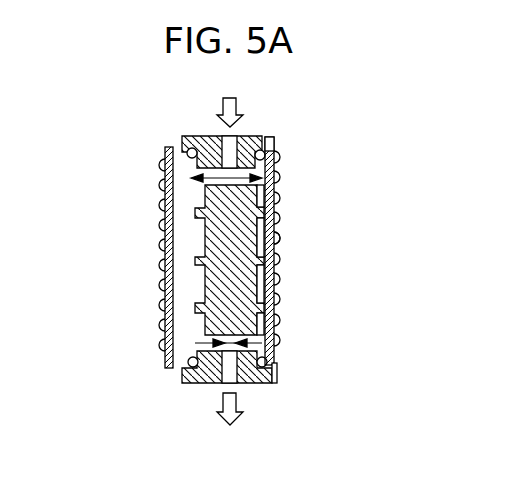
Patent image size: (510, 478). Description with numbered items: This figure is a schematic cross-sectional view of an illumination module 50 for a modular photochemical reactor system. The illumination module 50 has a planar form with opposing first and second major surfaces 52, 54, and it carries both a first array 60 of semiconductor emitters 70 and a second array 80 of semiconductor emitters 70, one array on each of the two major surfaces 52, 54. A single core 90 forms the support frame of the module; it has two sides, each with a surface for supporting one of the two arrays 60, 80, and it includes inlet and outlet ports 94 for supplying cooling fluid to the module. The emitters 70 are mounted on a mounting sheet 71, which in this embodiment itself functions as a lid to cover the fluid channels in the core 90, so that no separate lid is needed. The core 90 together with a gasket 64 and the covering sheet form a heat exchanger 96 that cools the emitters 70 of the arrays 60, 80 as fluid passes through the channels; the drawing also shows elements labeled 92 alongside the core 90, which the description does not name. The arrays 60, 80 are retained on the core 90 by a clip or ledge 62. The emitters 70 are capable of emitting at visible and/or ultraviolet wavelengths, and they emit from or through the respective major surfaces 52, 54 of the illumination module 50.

The illumination module 50 is at (115, 288).
The first major surface 52 is at (338, 248).
The second major surface 54 is at (125, 236).
The first array 60 is at (292, 375).
The clip or ledge 62 is at (288, 142).
The gasket 64 is at (188, 149).
The semiconductor emitters 70 is at (281, 307).
The mounting sheet 71 is at (290, 232).
The second array 80 is at (133, 338).
The core 90 is at (250, 191).
The seals 92 is at (340, 165).
The inlet and outlet ports 94 is at (248, 245).
The heat exchanger 96 is at (290, 250).